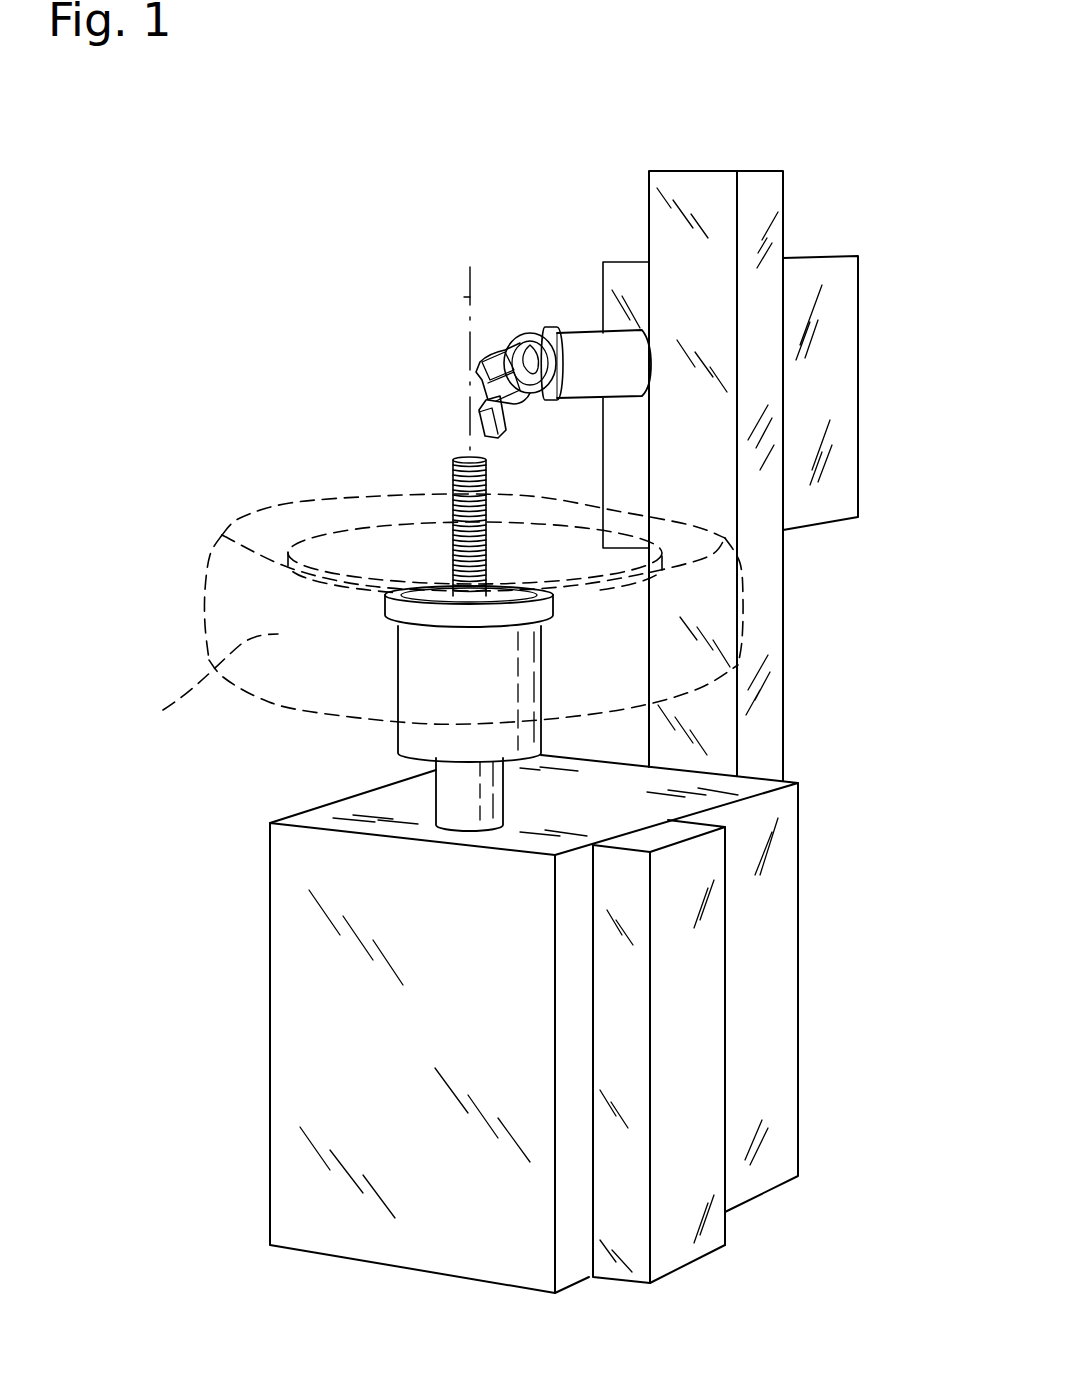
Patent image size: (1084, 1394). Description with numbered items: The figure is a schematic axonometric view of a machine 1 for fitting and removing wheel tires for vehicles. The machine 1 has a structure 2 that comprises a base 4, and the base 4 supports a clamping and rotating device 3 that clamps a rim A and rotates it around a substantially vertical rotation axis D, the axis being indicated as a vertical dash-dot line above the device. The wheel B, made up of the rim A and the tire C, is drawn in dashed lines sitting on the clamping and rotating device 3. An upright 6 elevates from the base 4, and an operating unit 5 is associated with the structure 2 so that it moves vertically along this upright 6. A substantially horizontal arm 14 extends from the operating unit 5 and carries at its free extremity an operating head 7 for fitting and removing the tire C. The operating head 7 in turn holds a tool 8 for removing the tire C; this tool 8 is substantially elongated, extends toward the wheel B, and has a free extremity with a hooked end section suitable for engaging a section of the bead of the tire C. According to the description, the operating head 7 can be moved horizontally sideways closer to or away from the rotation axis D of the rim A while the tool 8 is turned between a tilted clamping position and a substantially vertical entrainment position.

The machine 1 is at (865, 80).
The structure 2 is at (270, 1020).
The clamping and rotating device 3 is at (455, 688).
The base 4 is at (330, 1133).
The operating unit 5 is at (865, 465).
The upright 6 is at (772, 201).
The operating head 7 is at (500, 352).
The tool 8 is at (480, 428).
The arm 14 is at (545, 335).
The rim A is at (400, 555).
The wheel B is at (205, 597).
The tire C is at (205, 685).
The rotation axis D is at (462, 297).